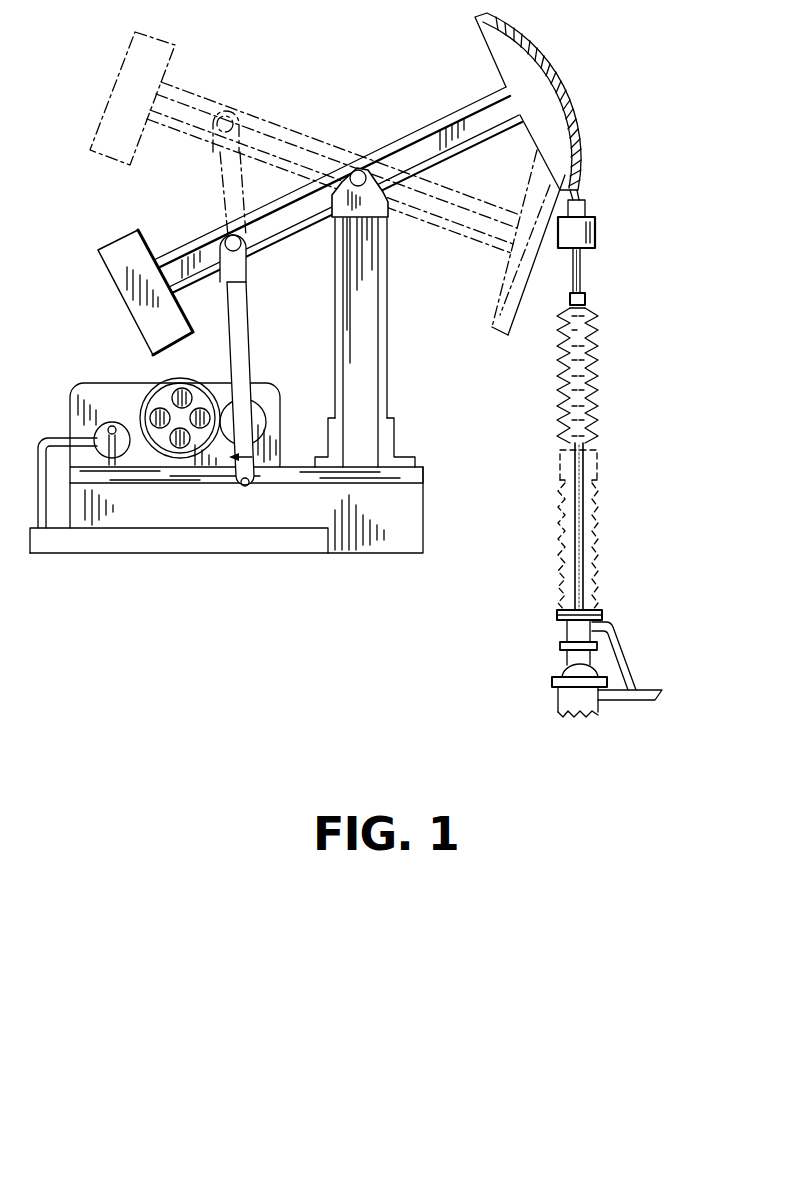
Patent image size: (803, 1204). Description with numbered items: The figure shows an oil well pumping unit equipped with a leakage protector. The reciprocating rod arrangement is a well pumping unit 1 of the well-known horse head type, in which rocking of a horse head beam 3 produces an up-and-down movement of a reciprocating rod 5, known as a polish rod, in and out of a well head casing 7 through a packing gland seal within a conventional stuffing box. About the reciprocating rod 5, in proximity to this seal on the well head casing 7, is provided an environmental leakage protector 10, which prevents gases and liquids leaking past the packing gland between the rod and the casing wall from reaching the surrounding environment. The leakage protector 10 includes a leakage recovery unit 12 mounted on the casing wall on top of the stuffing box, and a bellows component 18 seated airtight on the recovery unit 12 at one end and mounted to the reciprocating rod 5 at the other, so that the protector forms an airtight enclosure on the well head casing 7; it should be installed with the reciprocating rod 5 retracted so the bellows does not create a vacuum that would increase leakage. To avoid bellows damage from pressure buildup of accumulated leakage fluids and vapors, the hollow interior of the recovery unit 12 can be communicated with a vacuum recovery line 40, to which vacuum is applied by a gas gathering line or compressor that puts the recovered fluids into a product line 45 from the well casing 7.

The well pumping unit 1 is at (378, 100).
The horse head beam 3 is at (438, 110).
The bellows component 18 is at (606, 394).
The reciprocating rod 5 is at (585, 557).
The leakage protector 10 is at (536, 609).
The leakage recovery unit 12 is at (567, 627).
The vacuum recovery line 40 is at (634, 654).
The well head casing 7 is at (553, 672).
The product line 45 is at (642, 703).